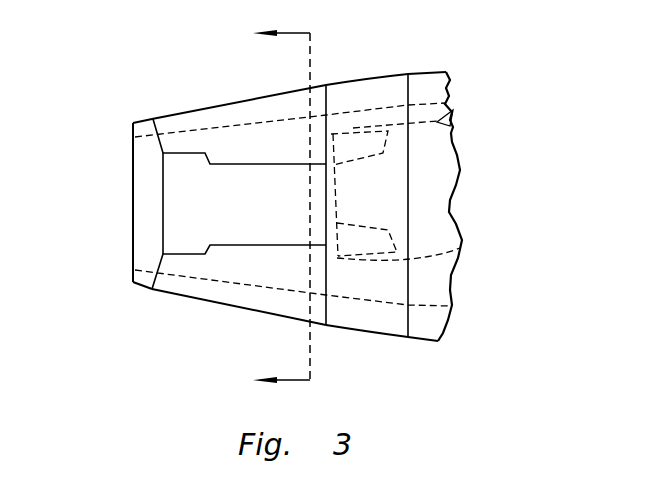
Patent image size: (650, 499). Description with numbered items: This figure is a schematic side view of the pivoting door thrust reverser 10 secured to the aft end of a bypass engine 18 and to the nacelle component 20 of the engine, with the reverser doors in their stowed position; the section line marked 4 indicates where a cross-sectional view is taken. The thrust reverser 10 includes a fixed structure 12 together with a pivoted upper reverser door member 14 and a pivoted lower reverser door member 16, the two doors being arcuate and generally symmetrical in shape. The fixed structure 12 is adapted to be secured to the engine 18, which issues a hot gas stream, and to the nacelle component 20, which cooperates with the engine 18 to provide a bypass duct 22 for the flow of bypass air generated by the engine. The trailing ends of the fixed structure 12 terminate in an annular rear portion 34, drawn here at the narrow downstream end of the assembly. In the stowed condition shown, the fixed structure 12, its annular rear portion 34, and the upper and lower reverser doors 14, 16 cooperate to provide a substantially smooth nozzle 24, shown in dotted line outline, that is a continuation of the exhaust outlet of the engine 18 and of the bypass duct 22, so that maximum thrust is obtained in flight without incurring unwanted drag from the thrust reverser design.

The section line 4- 4 is at (270, 207).
The pivoting door thrust reverser 10 is at (120, 318).
The fixed structure 12 is at (365, 75).
The upper reverser door member 14 is at (170, 116).
The lower reverser door member 16 is at (178, 297).
The bypass engine 18 is at (453, 110).
The nacelle component 20 is at (435, 70).
The bypass duct 22 is at (430, 285).
The nozzle 24 is at (217, 131).
The annular rear portion 34 is at (133, 168).